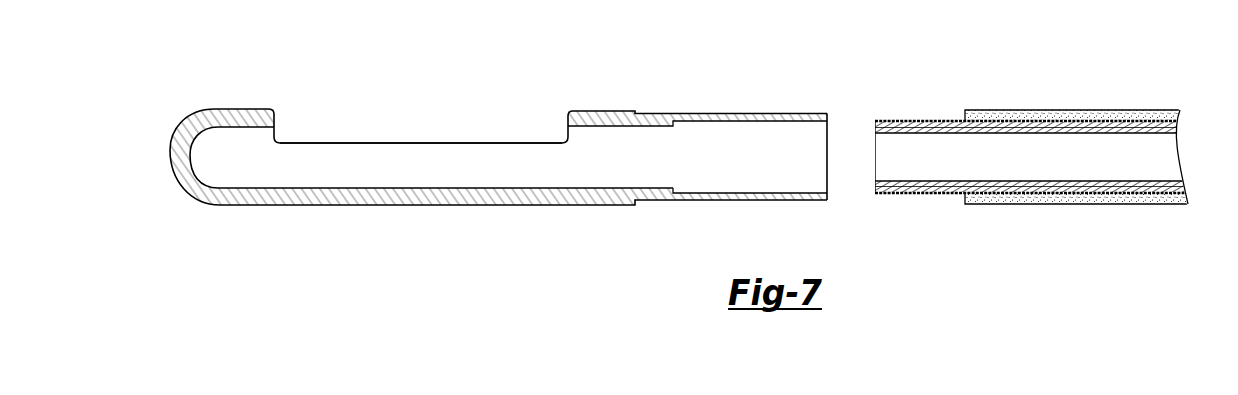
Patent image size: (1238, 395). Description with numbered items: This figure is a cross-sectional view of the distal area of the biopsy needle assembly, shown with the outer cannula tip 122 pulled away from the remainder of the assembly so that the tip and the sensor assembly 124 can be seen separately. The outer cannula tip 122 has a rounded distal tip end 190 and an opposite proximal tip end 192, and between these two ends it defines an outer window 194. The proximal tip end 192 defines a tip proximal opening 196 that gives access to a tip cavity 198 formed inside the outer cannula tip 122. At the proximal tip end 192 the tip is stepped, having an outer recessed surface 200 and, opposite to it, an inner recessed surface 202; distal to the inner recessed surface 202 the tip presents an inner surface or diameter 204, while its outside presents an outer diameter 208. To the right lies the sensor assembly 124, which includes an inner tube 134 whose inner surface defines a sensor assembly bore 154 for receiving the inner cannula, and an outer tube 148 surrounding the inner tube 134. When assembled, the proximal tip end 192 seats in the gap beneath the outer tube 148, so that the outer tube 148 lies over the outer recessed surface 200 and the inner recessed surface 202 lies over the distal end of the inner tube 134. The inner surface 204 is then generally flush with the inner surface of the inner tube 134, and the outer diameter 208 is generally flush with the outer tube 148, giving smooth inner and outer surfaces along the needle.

The outer cannula tip 122 is at (300, 206).
The rounded distal tip end 190 is at (171, 141).
The outer window 194 is at (332, 142).
The outer recessed surface 200 is at (700, 112).
The inner surface or diameter 204 is at (373, 188).
The tip cavity 198 is at (528, 167).
The inner recessed surface 202 is at (776, 196).
The proximal tip end 192 is at (829, 116).
The tip proximal opening 196 is at (819, 185).
The sensor assembly 124 is at (1035, 165).
The outer tube 148 is at (1022, 110).
The outer diameter of the outer cannula tip 208 is at (937, 121).
The inner tube 134 is at (1148, 133).
The sensor assembly bore 154 is at (1157, 176).